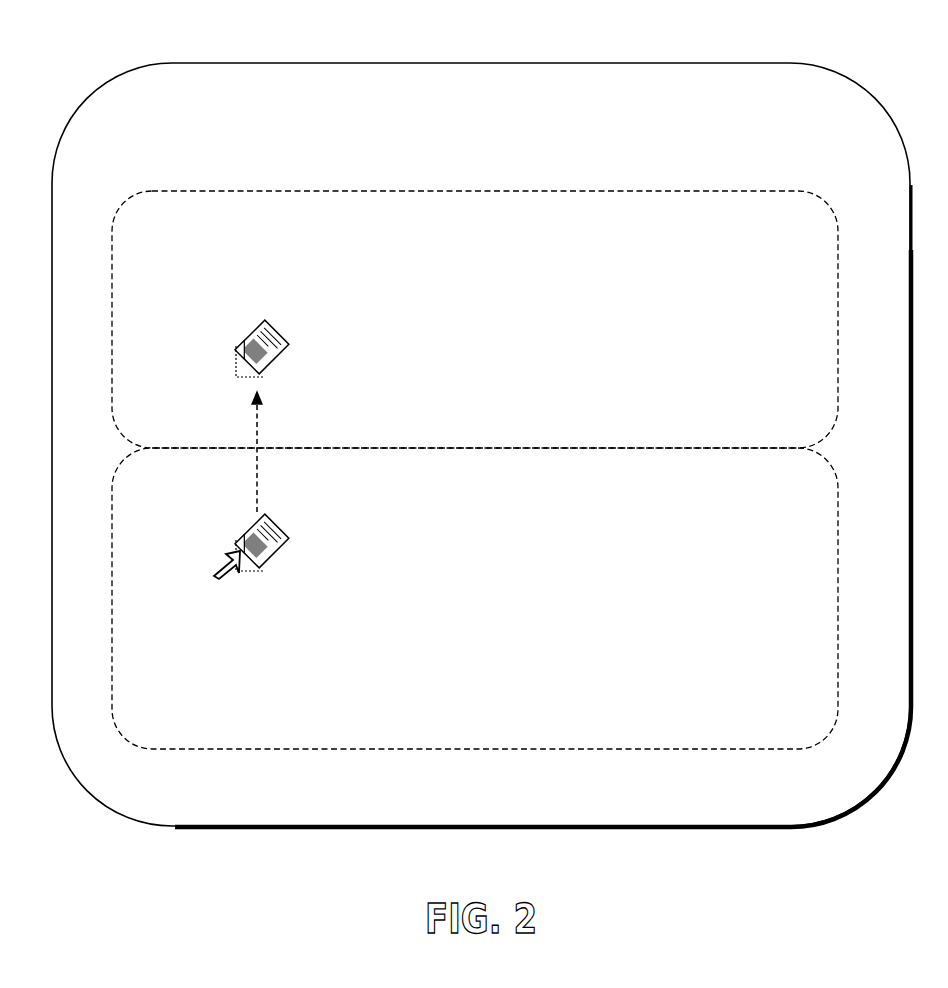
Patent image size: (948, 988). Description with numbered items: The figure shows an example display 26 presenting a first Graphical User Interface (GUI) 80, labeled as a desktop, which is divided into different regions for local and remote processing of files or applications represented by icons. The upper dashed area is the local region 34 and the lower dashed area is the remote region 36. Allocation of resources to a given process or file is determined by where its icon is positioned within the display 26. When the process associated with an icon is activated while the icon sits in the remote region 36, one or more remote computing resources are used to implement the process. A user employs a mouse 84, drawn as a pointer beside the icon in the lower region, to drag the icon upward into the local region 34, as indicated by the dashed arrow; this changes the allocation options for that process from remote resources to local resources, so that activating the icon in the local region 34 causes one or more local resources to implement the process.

The display 26 is at (497, 59).
The first Graphical User Interface 80 is at (696, 160).
The local region 34 is at (823, 197).
The remote region 36 is at (821, 458).
The mouse 84 is at (234, 559).